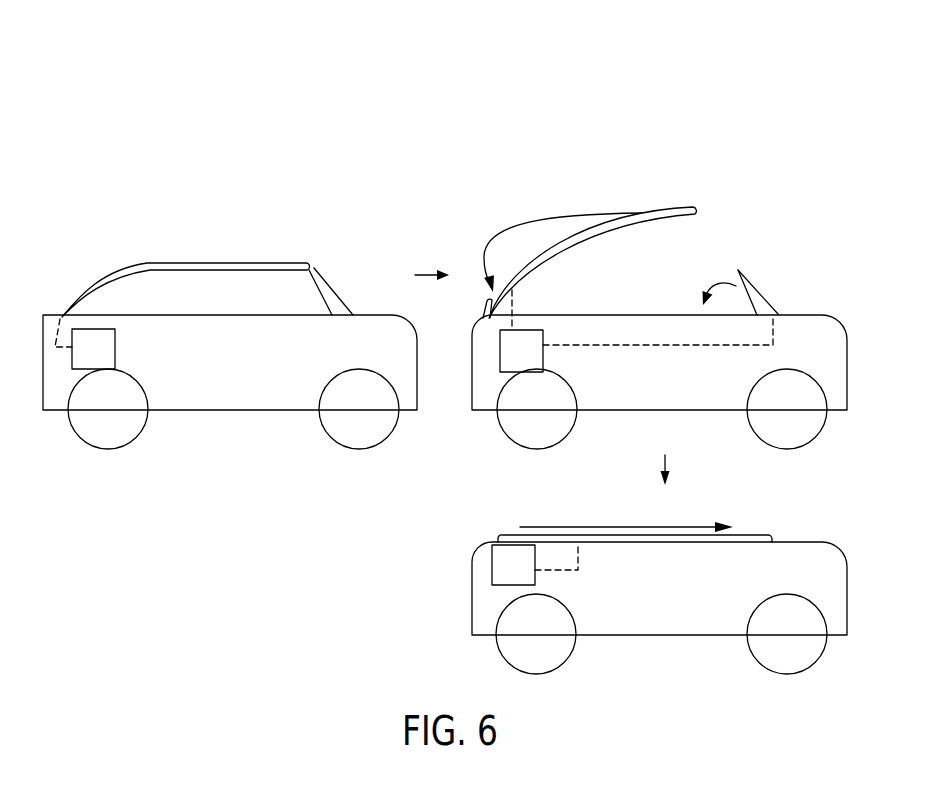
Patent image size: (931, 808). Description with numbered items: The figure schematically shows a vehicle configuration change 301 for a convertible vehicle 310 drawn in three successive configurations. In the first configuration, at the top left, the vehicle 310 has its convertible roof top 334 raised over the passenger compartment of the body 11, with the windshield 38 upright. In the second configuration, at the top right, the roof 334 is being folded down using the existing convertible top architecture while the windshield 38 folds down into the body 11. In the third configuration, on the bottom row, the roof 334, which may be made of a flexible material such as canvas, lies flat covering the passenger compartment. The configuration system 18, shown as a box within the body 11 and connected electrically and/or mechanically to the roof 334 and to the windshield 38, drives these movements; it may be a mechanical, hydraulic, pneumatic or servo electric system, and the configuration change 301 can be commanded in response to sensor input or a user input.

The vehicle configuration change 301 is at (95, 72).
The vehicle 310 is at (68, 229).
The body 11 is at (59, 358).
The configuration system 18 is at (90, 347).
The convertible roof top 334 is at (231, 260).
The windshield 38 is at (337, 297).